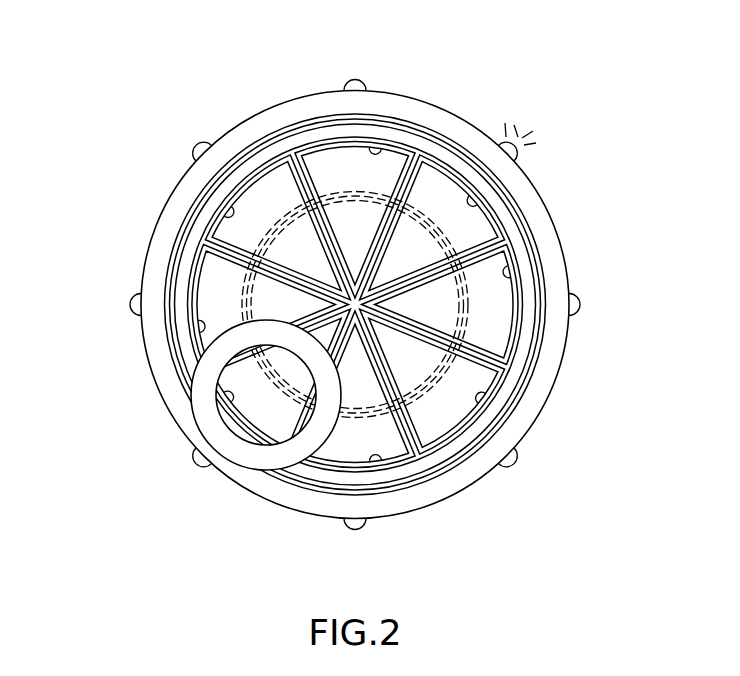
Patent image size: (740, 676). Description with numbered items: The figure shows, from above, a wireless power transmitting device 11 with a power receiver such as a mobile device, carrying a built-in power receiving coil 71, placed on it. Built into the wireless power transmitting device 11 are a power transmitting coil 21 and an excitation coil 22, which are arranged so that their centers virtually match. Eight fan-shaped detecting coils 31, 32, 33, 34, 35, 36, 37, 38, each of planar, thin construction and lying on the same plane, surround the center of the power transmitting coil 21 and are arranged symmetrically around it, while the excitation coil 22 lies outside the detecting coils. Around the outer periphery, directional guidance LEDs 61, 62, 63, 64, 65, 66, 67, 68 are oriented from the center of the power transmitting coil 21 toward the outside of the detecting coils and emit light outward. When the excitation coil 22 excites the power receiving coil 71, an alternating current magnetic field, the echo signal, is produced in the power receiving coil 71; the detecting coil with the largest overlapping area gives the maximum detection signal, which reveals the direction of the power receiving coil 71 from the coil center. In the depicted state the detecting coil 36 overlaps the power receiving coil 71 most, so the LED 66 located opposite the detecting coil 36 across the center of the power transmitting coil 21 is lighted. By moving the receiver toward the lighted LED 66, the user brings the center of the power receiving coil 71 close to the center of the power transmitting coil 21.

The wireless power transmitting device 11 is at (530, 92).
The power transmitting coil 21 is at (466, 322).
The excitation coil 22 is at (533, 387).
The detecting coil 31 is at (376, 147).
The detecting coil 32 is at (475, 204).
The detecting coil 33 is at (508, 274).
The detecting coil 34 is at (484, 400).
The detecting coil 35 is at (381, 456).
The detecting coil 36 is at (226, 400).
The detecting coil 37 is at (202, 328).
The detecting coil 38 is at (226, 210).
The directional guidance LED 61 is at (353, 530).
The directional guidance LED 62 is at (196, 466).
The directional guidance LED 63 is at (128, 305).
The directional guidance LED 64 is at (198, 150).
The directional guidance LED 65 is at (358, 79).
The directional guidance LED 66 is at (519, 146).
The directional guidance LED 67 is at (580, 304).
The directional guidance LED 68 is at (516, 467).
The power receiving coil 71 is at (243, 455).